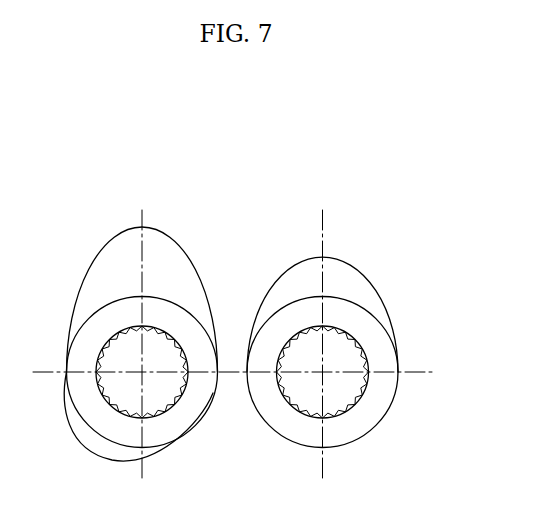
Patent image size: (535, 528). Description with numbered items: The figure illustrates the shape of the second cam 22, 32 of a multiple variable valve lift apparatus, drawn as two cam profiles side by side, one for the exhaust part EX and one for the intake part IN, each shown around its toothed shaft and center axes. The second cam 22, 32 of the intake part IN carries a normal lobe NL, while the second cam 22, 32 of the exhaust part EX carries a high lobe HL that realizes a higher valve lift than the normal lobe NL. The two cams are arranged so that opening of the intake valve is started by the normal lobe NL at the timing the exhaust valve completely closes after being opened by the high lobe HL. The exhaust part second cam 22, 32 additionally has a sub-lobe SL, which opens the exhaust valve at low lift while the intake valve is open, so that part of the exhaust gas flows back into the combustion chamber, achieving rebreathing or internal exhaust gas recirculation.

The second cam 22 is at (322, 300).
The second cam 32 is at (322, 300).
The high lobe HL is at (166, 247).
The sub-lobe SL is at (92, 445).
The normal lobe NL is at (352, 278).
The exhaust part EX is at (142, 372).
The intake part IN is at (322, 372).